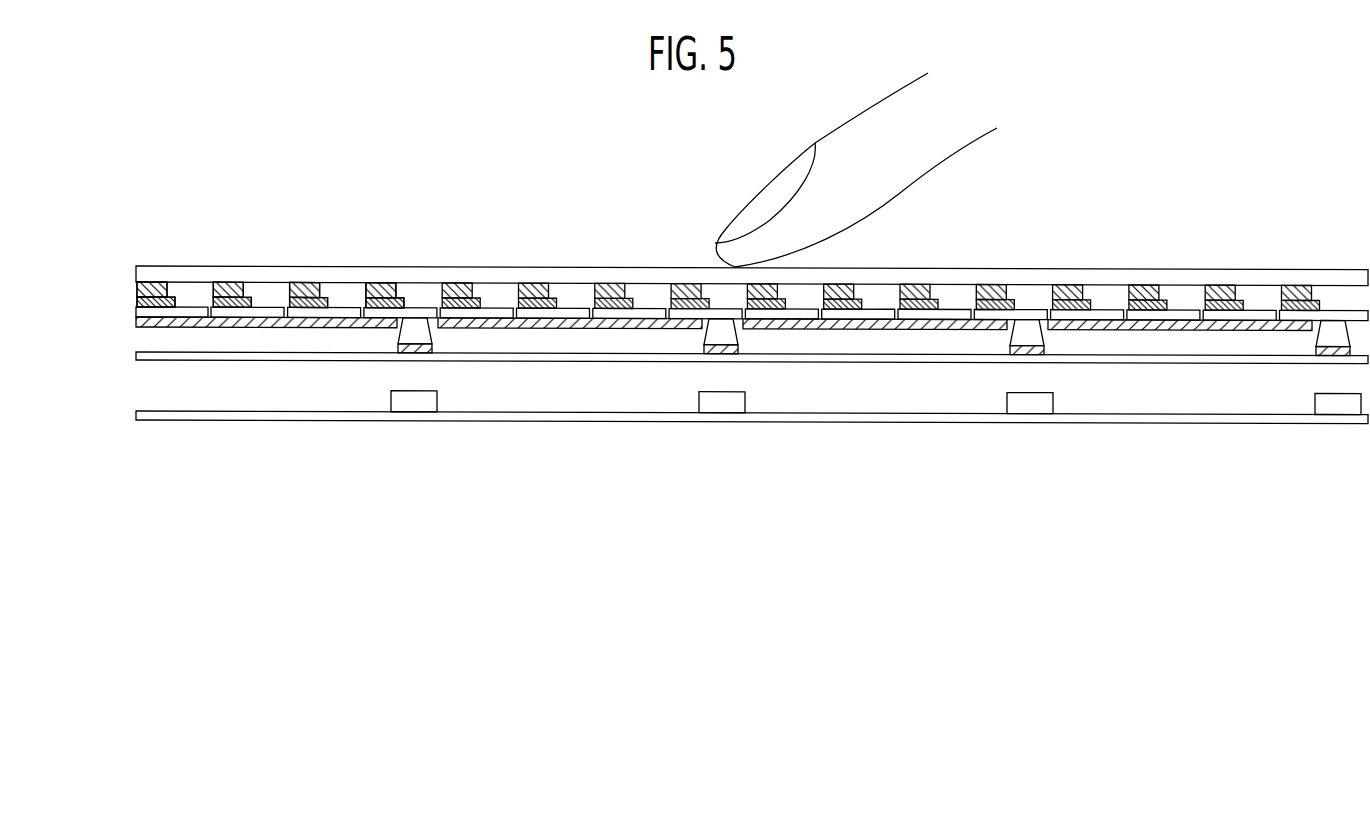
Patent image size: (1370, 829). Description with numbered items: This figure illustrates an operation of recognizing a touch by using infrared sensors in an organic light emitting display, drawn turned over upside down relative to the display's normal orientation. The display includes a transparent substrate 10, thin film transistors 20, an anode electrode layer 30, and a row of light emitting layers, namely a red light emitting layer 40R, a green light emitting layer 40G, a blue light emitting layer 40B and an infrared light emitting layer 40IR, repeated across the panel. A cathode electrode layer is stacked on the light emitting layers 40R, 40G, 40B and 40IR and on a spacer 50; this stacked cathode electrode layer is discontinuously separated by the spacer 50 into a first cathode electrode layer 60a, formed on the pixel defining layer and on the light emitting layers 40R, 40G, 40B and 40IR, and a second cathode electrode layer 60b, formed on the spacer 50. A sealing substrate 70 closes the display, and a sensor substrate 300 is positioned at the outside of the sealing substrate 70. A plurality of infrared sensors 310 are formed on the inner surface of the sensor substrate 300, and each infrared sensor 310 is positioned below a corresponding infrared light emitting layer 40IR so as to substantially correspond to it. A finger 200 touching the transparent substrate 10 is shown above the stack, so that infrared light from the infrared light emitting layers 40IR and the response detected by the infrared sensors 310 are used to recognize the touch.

The transparent substrate 10 is at (140, 272).
The thin film transistors 20 is at (138, 284).
The anode electrode layer 30 is at (140, 302).
The red light emitting layer 40R is at (197, 313).
The green light emitting layer 40G is at (268, 313).
The blue light emitting layer 40B is at (345, 313).
The infrared light emitting layer 40IR is at (423, 313).
The spacer 50 is at (410, 340).
The first cathode electrode layer 60a is at (138, 322).
The second cathode electrode layer 60b is at (413, 347).
The sealing substrate 70 is at (136, 356).
The finger 200 is at (958, 142).
The sensor substrate 300 is at (136, 415).
The infrared sensors 310 is at (398, 402).